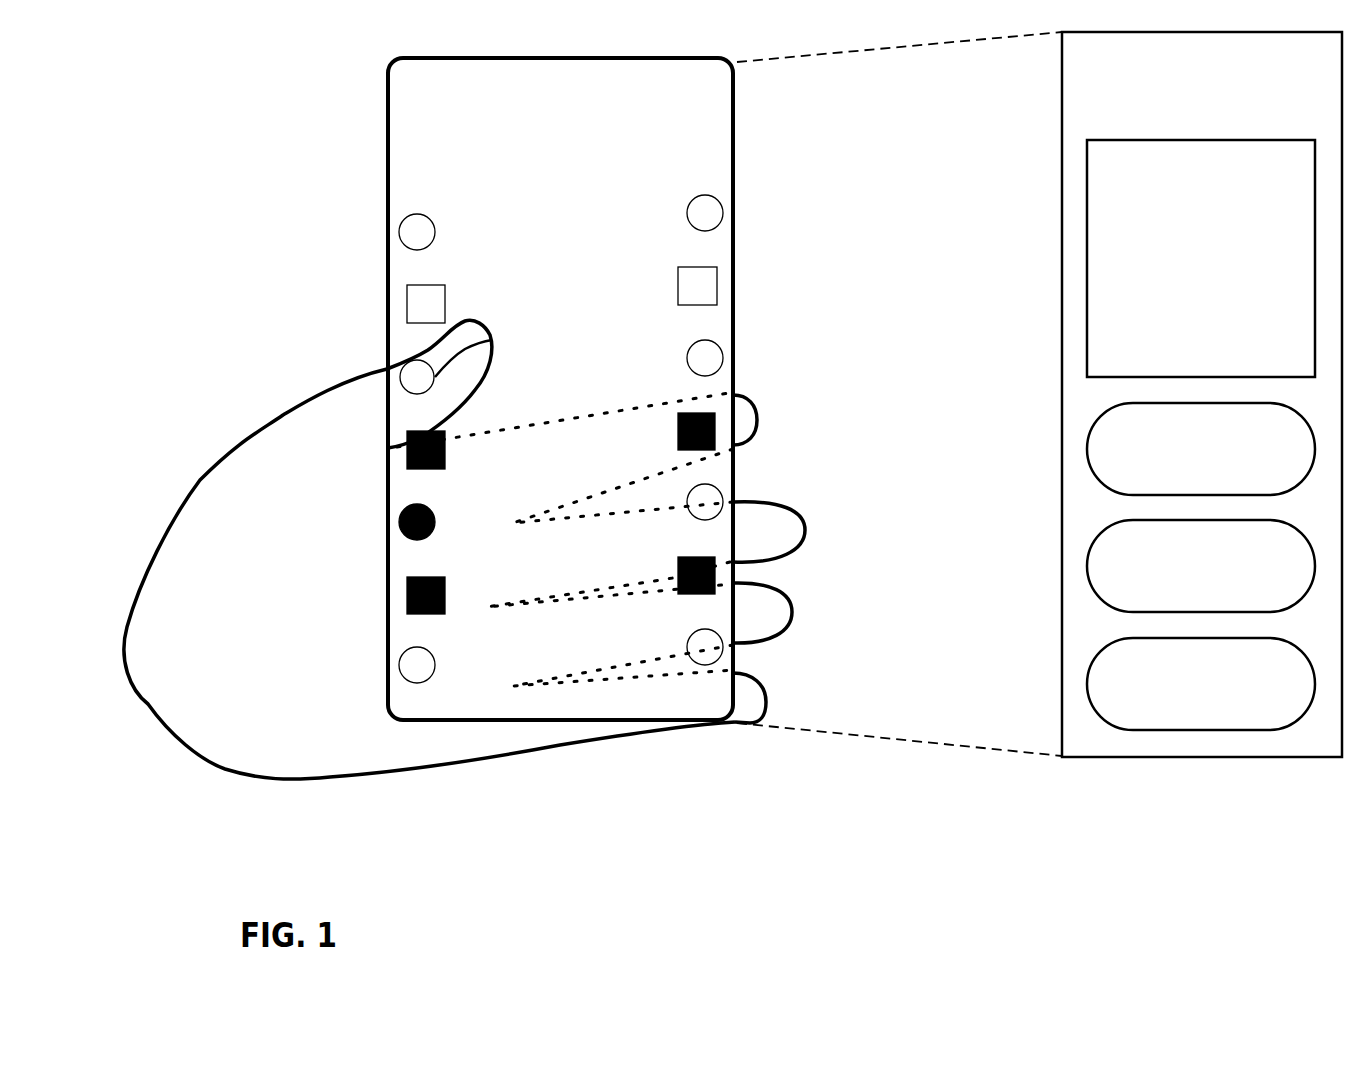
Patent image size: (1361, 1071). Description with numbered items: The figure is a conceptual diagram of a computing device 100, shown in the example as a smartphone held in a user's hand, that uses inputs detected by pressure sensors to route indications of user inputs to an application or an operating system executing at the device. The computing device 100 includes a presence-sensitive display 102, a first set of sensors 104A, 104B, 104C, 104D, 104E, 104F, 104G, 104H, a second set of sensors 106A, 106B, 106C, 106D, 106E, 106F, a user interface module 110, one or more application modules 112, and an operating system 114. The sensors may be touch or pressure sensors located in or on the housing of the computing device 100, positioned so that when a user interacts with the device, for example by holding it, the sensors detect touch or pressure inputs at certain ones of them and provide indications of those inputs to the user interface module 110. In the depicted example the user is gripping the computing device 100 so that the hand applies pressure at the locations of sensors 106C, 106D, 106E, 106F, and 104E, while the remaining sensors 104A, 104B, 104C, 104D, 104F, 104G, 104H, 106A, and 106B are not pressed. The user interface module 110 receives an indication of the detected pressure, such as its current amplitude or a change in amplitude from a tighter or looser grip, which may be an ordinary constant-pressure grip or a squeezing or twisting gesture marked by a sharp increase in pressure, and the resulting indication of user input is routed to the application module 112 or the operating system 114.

The computing device 100 is at (865, 394).
The presence-sensitive display 102 is at (1201, 258).
The sensor 104A is at (418, 214).
The sensor 104B is at (705, 195).
The sensor 104C is at (488, 341).
The sensor 104D is at (705, 340).
The sensor 104E is at (418, 504).
The sensor 104F is at (705, 484).
The sensor 104G is at (418, 647).
The sensor 104H is at (705, 629).
The sensor 106A is at (440, 285).
The sensor 106B is at (683, 267).
The sensor 106C is at (443, 431).
The sensor 106D is at (690, 413).
The sensor 106E is at (440, 577).
The sensor 106F is at (687, 557).
The user interface module 110 is at (1201, 449).
The application module 112 is at (1201, 566).
The operating system 114 is at (1201, 684).